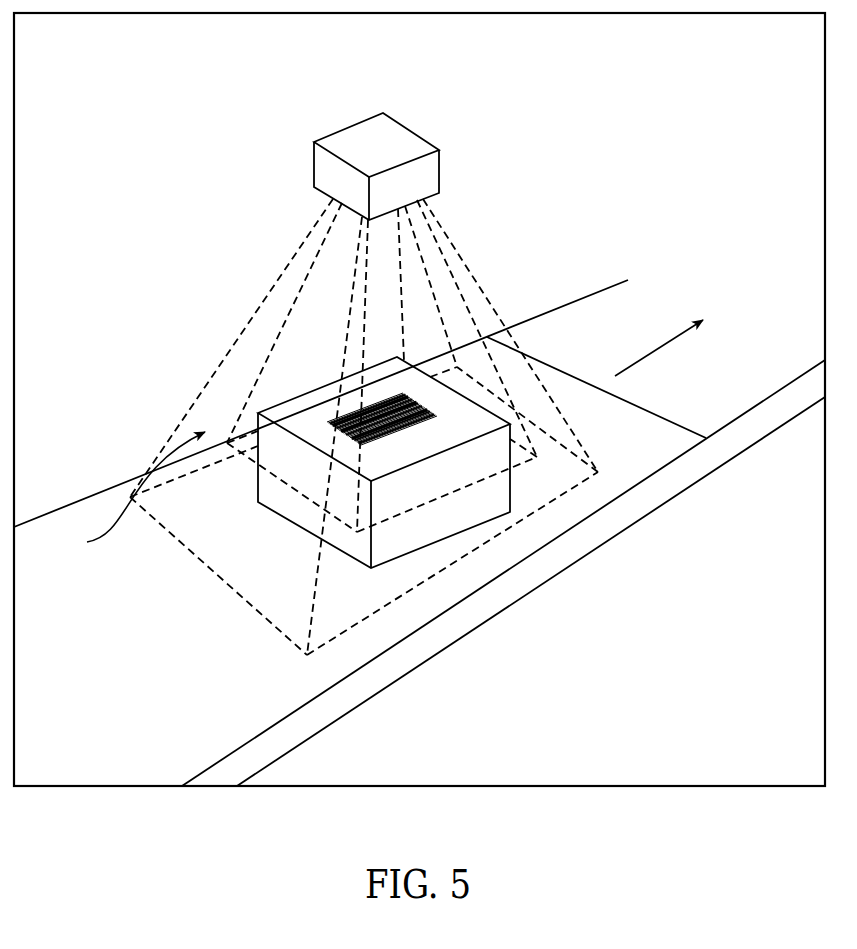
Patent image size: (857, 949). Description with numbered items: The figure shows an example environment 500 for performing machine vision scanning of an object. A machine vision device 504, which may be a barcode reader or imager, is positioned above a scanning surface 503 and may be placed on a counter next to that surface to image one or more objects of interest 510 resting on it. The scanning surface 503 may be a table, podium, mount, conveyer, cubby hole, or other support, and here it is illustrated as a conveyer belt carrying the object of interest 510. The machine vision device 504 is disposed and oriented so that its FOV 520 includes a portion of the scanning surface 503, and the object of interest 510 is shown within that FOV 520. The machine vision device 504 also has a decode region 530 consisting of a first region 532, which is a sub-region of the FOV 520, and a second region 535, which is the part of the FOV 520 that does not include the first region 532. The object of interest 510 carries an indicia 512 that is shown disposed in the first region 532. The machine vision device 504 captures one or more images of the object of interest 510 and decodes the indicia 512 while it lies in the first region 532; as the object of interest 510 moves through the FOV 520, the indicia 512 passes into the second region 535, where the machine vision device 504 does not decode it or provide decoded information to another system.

The environment 500 is at (185, 105).
The scanning surface 503 is at (675, 443).
The machine vision device 504 is at (412, 130).
The object of interest 510 is at (442, 540).
The indicia 512 is at (418, 420).
The FOV 520 is at (492, 310).
The decode region 530 is at (300, 290).
The first region 532 is at (412, 350).
The second region 535 is at (120, 496).